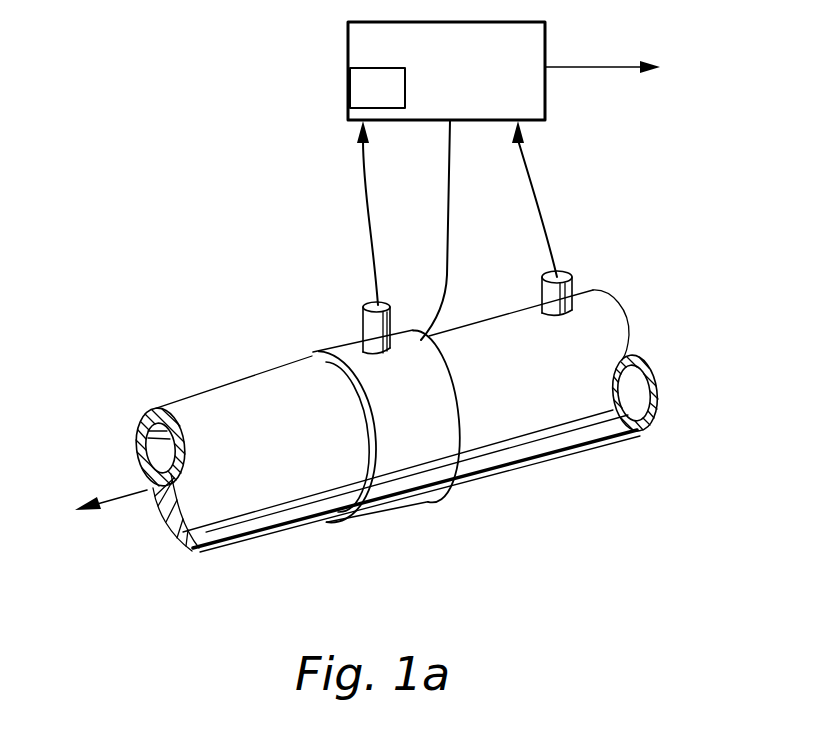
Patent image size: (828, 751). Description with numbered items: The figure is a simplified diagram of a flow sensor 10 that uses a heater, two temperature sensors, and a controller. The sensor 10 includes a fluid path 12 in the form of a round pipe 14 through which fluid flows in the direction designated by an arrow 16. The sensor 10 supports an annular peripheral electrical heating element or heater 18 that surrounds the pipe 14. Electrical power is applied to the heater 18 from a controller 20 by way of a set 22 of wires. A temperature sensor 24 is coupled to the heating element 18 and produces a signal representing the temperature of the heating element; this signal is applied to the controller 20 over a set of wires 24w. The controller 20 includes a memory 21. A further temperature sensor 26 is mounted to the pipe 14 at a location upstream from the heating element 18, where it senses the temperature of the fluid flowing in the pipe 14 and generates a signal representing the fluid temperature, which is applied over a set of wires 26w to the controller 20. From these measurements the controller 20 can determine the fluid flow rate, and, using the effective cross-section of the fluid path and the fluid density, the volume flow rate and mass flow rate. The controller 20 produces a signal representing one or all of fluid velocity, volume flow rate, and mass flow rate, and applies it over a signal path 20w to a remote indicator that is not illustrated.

The sensor 10 is at (368, 419).
The fluid path 12 is at (160, 450).
The round pipe 14 is at (290, 523).
The arrow 16 is at (116, 501).
The annular peripheral electrical heating element 18 is at (402, 500).
The controller 20 is at (422, 69).
The signal path 20w is at (595, 65).
The memory 21 is at (350, 84).
The set of wires 22 is at (448, 244).
The temperature sensor 24 is at (362, 311).
The set of wires 24w is at (370, 241).
The further temperature sensor 26 is at (570, 272).
The set of wires 26w is at (545, 209).